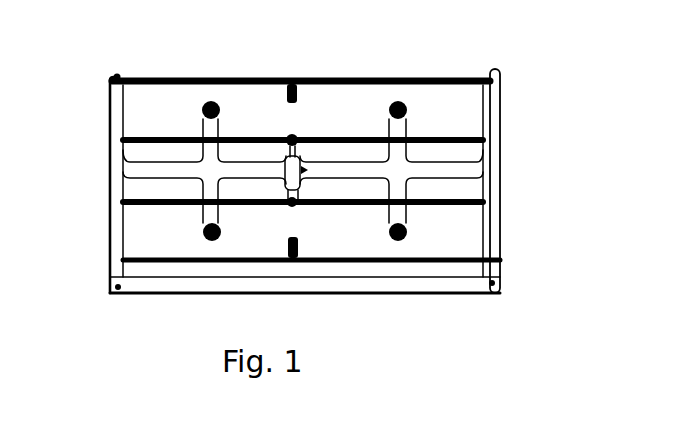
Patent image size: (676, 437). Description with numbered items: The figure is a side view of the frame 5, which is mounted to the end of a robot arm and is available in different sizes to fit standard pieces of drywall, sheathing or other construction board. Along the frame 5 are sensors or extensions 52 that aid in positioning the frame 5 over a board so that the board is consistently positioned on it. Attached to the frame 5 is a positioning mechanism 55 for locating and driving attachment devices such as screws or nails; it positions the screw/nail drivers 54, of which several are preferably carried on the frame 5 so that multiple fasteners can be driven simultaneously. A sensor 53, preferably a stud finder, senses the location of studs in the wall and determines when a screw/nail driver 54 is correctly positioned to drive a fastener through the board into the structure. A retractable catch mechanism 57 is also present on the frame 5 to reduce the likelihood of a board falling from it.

The frame 5 is at (314, 193).
The sensors or extensions 52 is at (118, 76).
The sensor 53 is at (287, 158).
The screw/nail driver 54 is at (202, 104).
The positioning mechanism 55 is at (333, 78).
The retractable catch mechanism 57 is at (135, 292).